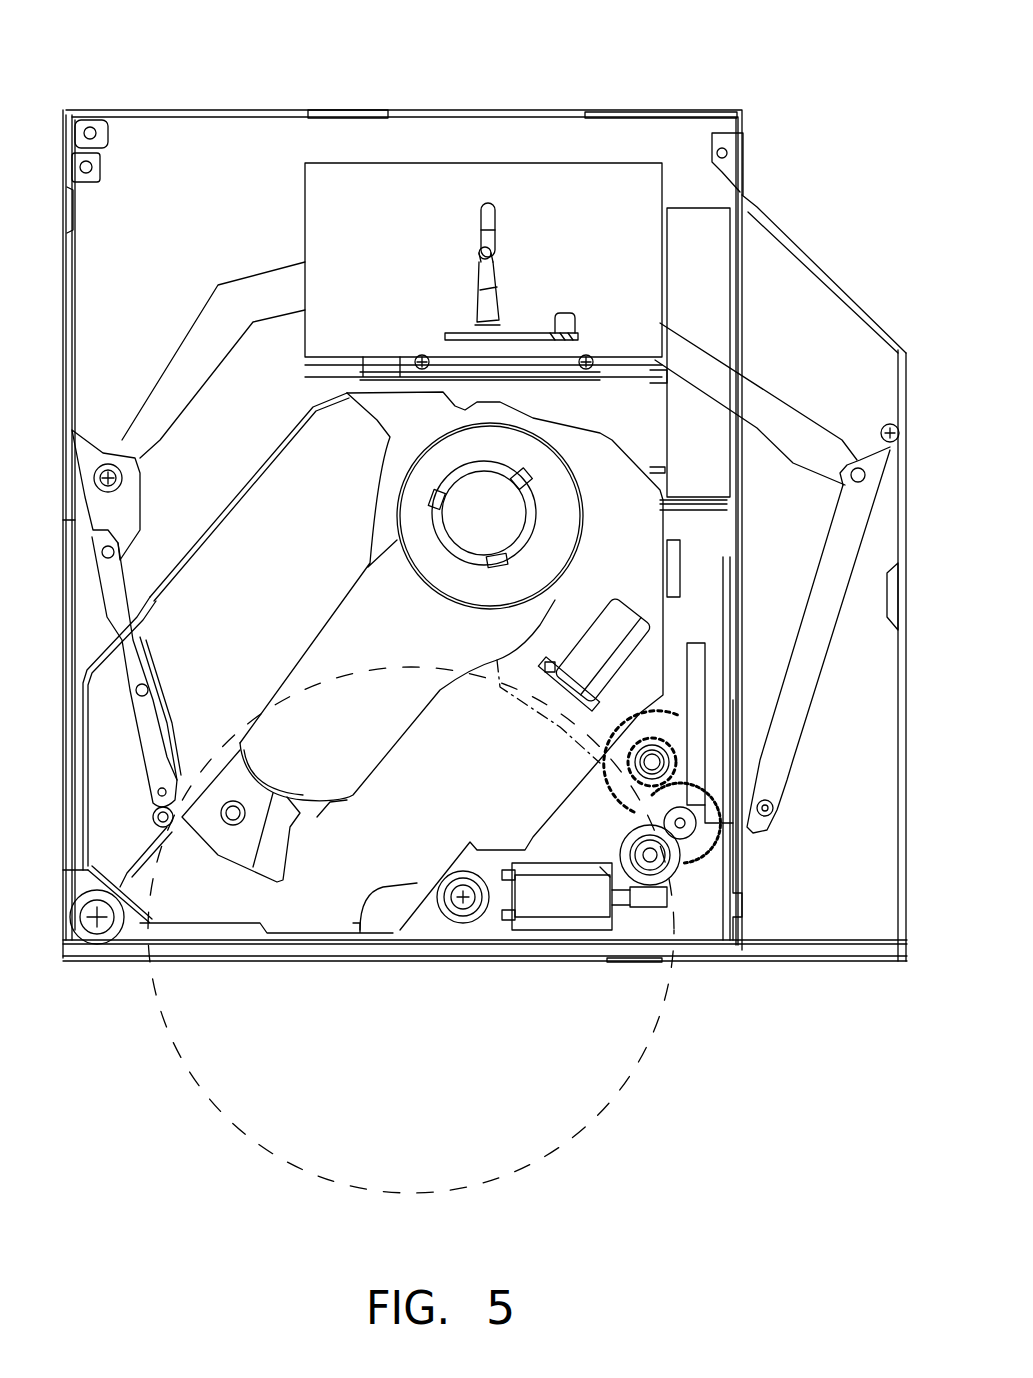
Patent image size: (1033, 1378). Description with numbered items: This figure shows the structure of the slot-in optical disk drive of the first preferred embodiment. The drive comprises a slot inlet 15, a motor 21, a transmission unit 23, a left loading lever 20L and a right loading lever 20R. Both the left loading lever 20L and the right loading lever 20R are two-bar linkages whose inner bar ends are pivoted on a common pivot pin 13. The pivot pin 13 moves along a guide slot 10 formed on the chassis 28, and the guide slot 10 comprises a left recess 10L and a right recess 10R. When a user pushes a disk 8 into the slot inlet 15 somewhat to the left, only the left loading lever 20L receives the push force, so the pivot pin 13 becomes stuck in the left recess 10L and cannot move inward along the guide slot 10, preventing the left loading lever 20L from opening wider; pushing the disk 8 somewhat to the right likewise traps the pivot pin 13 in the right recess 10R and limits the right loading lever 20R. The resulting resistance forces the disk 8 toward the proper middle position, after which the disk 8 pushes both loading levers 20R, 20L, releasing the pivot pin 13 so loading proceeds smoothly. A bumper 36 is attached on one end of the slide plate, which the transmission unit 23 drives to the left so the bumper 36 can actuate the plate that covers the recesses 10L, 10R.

The disk 8 is at (483, 1142).
The guide slot 10 is at (483, 253).
The left recess 10L is at (480, 247).
The right recess 10R is at (497, 247).
The pivot pin 13 is at (489, 243).
The slot inlet 15 is at (383, 887).
The left loading lever 20L is at (147, 710).
The right loading lever 20R is at (797, 707).
The motor 21 is at (557, 917).
The transmission unit 23 is at (712, 893).
The chassis 28 is at (608, 192).
The bumper 36 is at (573, 320).